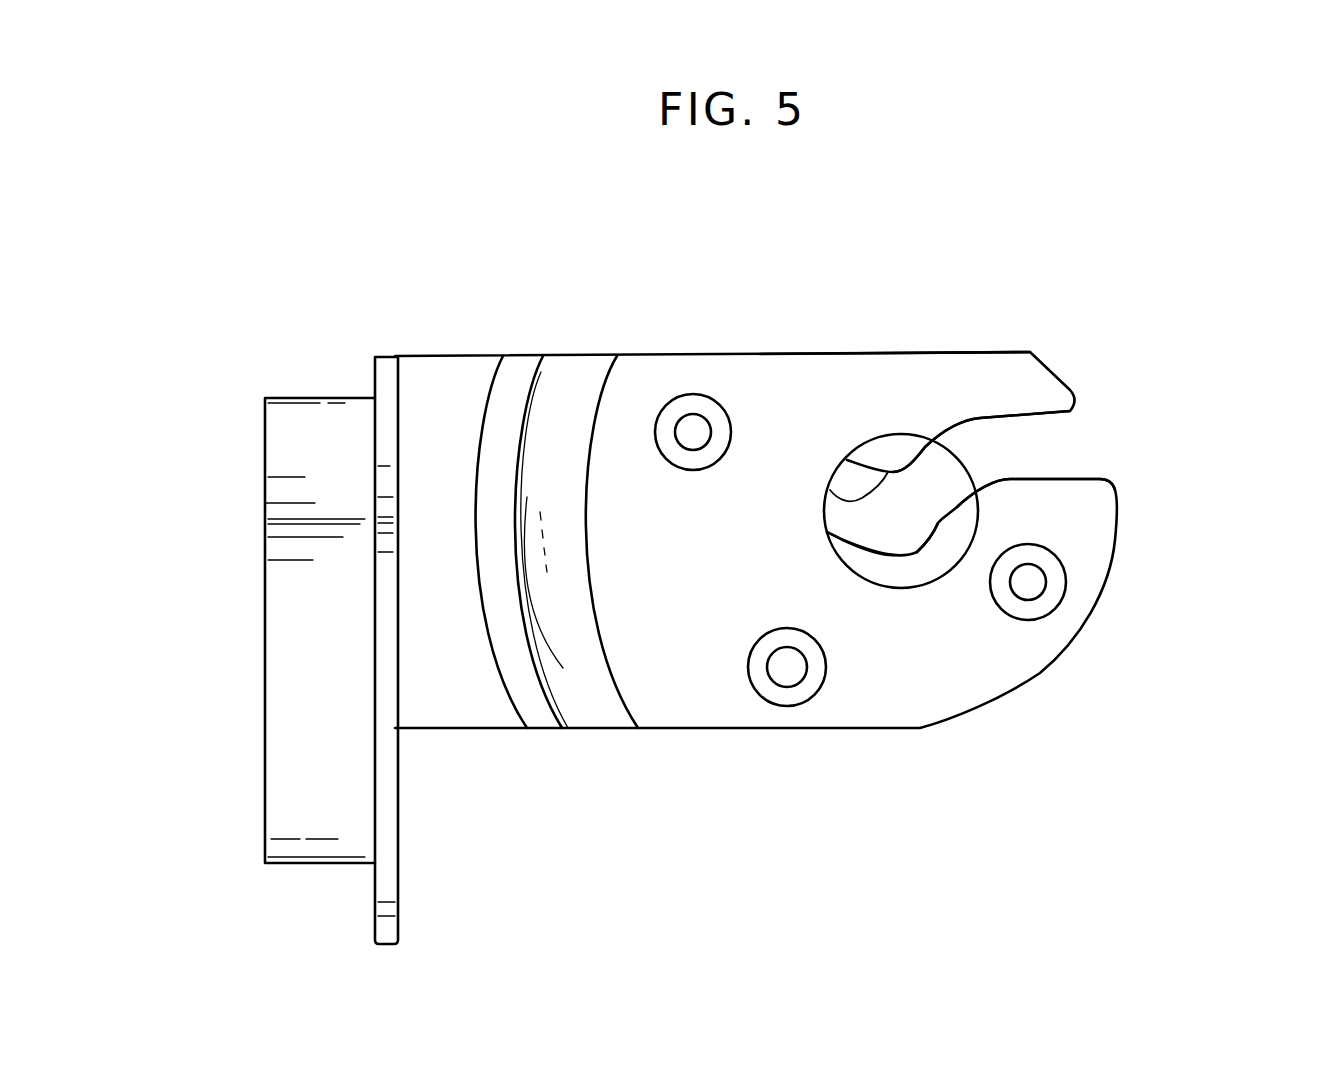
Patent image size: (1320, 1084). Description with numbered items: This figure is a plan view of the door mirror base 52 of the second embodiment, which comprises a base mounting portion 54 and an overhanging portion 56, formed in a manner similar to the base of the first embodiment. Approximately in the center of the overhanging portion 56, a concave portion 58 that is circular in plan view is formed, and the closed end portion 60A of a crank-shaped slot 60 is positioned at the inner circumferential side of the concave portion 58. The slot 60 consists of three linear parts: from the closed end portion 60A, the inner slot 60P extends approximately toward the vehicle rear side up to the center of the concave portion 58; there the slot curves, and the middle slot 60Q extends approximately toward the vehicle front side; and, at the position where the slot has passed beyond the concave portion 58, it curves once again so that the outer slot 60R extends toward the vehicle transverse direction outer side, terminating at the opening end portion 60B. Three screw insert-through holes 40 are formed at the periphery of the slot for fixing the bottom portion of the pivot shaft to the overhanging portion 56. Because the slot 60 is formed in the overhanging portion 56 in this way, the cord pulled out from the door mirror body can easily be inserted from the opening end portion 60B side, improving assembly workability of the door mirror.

The screw insert-through holes 40 is at (700, 425).
The door mirror base 52 is at (815, 323).
The base mounting portion 54 is at (287, 713).
The overhanging portion 56 is at (847, 353).
The concave portion 58 is at (878, 583).
The crank-shaped slot 60 is at (1050, 446).
The closed end portion 60A is at (880, 482).
The opening end portion 60B is at (1077, 478).
The inner slot 60P is at (873, 533).
The middle slot 60Q is at (933, 495).
The outer slot 60R is at (1017, 460).